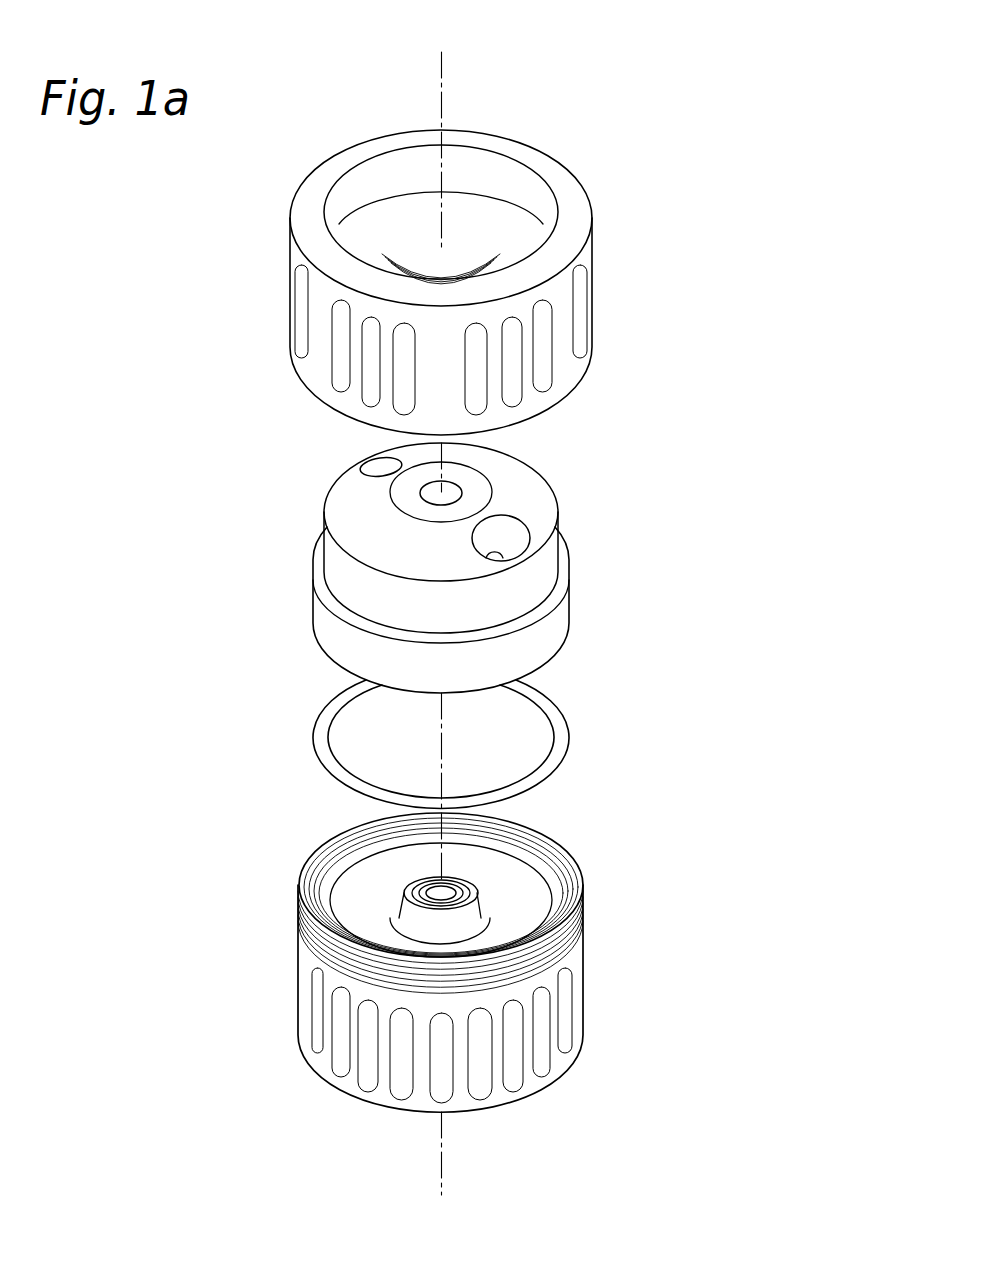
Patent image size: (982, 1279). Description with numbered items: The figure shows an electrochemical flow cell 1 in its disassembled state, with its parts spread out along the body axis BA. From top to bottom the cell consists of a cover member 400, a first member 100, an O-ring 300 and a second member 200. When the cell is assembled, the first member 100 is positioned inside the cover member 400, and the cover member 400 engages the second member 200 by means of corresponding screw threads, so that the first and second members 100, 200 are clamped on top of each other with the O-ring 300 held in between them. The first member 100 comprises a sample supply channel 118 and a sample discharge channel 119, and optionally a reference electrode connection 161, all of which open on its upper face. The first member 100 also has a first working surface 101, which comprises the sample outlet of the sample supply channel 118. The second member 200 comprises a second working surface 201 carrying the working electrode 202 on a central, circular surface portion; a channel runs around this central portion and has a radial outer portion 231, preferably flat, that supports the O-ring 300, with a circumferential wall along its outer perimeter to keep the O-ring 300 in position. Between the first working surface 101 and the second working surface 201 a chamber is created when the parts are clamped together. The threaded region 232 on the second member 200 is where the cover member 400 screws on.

The electrochemical flow cell 1 is at (647, 252).
The body axis BA is at (442, 63).
The cover member 400 is at (582, 338).
The first member 100 is at (478, 561).
The first working surface 101 is at (556, 668).
The sample supply channel 118 is at (450, 492).
The sample discharge channel 119 is at (368, 472).
The reference electrode connection 161 is at (507, 548).
The O-ring 300 is at (560, 748).
The second member 200 is at (481, 955).
The second working surface 201 is at (510, 875).
The working electrode 202 is at (432, 895).
The radial outer portion 231 is at (556, 897).
The thread of cap 232 is at (570, 912).